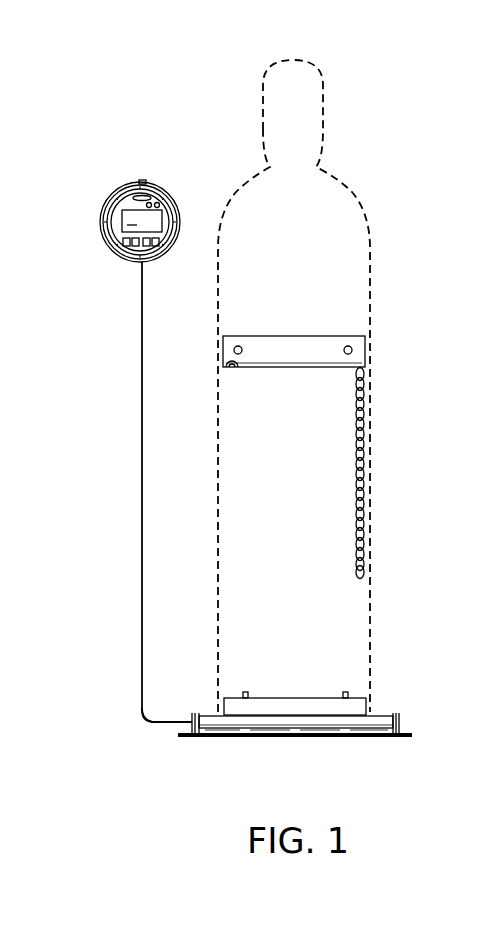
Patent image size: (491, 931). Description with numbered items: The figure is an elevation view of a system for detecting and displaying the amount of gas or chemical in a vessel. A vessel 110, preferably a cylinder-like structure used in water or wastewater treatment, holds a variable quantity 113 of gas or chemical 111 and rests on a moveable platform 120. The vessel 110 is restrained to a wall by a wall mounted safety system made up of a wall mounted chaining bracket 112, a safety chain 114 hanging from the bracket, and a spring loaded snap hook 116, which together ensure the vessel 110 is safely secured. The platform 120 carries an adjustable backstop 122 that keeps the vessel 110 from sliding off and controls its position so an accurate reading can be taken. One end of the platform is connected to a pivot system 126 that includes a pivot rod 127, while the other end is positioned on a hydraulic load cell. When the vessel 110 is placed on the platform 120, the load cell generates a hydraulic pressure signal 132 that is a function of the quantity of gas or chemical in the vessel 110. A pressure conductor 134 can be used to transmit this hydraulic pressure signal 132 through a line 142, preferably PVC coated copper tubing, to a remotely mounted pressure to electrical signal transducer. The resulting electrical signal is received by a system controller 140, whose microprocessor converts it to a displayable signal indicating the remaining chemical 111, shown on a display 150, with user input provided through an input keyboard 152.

The vessel 110 is at (360, 200).
The gas or chemical 111 is at (236, 583).
The wall mounted chaining bracket 112 is at (367, 350).
The variable quantity 113 is at (343, 588).
The safety chain 114 is at (365, 482).
The spring loaded snap hook 116 is at (232, 368).
The moveable platform 120 is at (353, 715).
The adjustable backstop 122 is at (255, 697).
The pivot system 126 is at (402, 720).
The pivot rod 127 is at (198, 735).
The hydraulic pressure signal 132 is at (145, 718).
The pressure conductor 134 is at (188, 724).
The system controller 140 is at (143, 180).
The line 142 is at (142, 523).
The display 150 is at (122, 223).
The input keyboard 152 is at (147, 246).